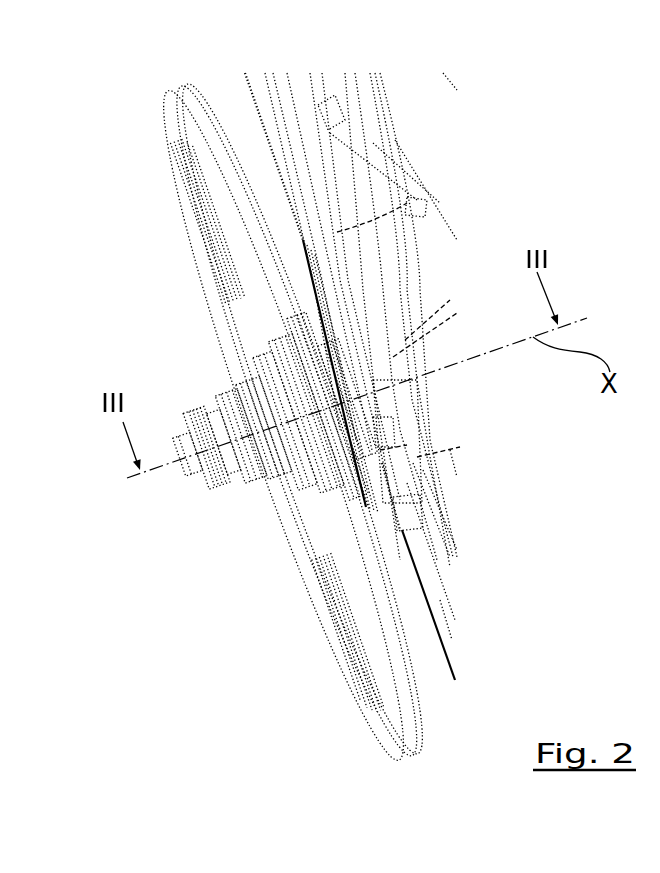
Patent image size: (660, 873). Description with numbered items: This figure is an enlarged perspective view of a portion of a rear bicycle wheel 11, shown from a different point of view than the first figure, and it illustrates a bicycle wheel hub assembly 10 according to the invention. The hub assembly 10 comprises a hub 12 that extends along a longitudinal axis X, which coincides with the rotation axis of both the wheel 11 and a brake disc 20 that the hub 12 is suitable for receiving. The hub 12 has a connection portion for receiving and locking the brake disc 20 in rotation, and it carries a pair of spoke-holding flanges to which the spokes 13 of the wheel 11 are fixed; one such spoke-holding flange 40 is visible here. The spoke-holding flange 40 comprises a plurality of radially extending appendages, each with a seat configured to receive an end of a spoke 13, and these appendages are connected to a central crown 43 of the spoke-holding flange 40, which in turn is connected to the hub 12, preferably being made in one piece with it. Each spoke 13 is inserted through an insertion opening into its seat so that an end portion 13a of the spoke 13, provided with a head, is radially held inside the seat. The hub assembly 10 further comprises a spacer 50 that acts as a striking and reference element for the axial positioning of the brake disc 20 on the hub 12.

The bicycle wheel hub assembly 10 is at (231, 526).
The rear bicycle wheel 11 is at (160, 655).
The hub 12 is at (200, 468).
The spokes 13 is at (320, 103).
The end portion of the spoke 13a is at (378, 380).
The brake disc 20 is at (177, 148).
The spoke-holding flange 40 is at (357, 357).
The central crown 43 is at (353, 340).
The spacer 50 is at (320, 328).